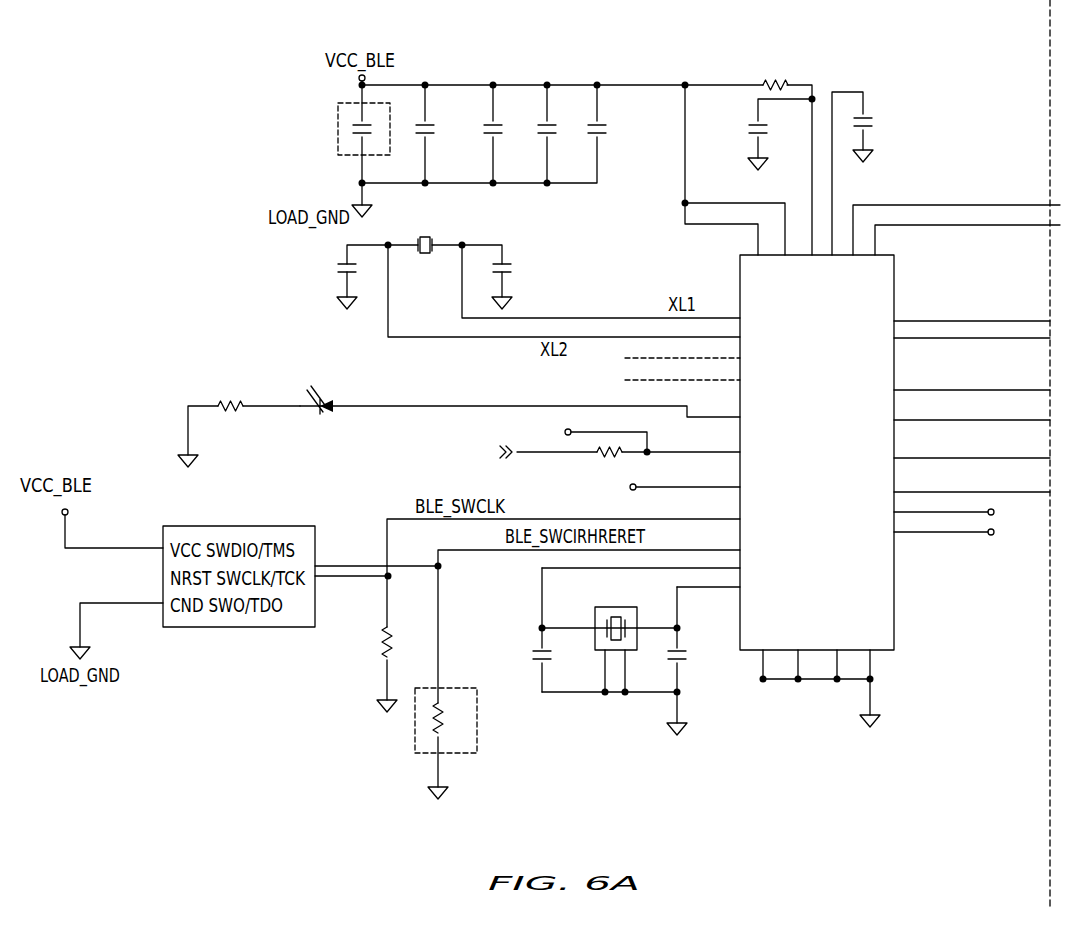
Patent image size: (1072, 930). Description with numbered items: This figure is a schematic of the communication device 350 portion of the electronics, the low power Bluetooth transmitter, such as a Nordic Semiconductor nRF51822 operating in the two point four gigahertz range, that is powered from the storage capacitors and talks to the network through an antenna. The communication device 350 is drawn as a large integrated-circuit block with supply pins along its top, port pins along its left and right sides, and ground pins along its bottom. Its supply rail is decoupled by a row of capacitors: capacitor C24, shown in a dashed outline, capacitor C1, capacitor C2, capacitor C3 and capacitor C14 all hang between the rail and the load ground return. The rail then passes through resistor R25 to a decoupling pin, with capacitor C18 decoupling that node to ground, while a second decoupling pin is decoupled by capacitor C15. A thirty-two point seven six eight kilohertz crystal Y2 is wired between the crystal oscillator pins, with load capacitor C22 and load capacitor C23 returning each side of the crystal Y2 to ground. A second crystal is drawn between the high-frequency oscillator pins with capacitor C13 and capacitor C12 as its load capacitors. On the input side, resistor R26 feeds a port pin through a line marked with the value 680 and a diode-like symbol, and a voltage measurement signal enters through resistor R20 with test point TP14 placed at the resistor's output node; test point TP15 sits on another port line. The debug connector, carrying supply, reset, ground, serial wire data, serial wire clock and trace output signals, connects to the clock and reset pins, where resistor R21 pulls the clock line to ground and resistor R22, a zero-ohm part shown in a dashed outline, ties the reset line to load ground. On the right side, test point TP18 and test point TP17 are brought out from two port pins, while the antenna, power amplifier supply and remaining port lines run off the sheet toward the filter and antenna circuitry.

The communication device 350 is at (882, 255).
The capacitor C24 0.1uF C24 is at (336, 155).
The capacitor C1 1uF C1 is at (441, 134).
The capacitor C2 0.1uF C2 is at (500, 128).
The capacitor C3 0.1uF C3 is at (555, 128).
The capacitor C14 0.047uF C14 is at (626, 144).
The resistor R25 is at (750, 76).
The capacitor C18 0.047uF C18 is at (755, 150).
The capacitor C15 0.1uF C15 is at (877, 166).
The crystal Y2 32.768kHz Y2 is at (436, 225).
The capacitor C22 9pF C22 is at (340, 290).
The capacitor C23 9pF C23 is at (531, 260).
The resistor R26 is at (239, 424).
The resistor value 680 / diode 680 is at (495, 399).
The test point TP14 is at (583, 437).
The resistor R20 is at (570, 465).
The test point TP15 is at (672, 490).
The resistor R21 10.0K R21 is at (363, 666).
The resistor R22 0 ohm R22 is at (433, 757).
The capacitor C13 12pF C13 is at (524, 630).
The capacitor C12 12pF C12 is at (696, 661).
The test point TP18 is at (967, 512).
The test point TP17 is at (967, 532).